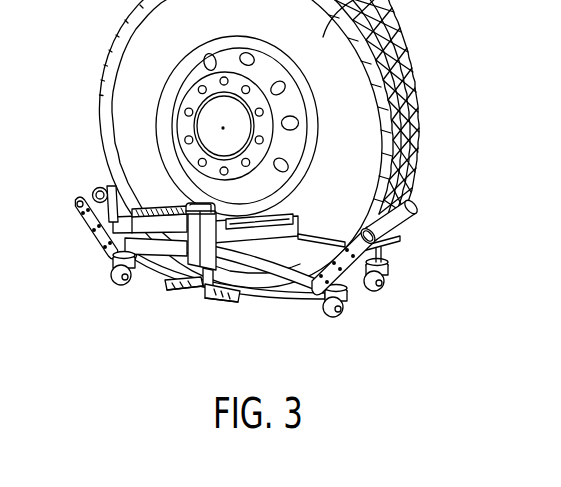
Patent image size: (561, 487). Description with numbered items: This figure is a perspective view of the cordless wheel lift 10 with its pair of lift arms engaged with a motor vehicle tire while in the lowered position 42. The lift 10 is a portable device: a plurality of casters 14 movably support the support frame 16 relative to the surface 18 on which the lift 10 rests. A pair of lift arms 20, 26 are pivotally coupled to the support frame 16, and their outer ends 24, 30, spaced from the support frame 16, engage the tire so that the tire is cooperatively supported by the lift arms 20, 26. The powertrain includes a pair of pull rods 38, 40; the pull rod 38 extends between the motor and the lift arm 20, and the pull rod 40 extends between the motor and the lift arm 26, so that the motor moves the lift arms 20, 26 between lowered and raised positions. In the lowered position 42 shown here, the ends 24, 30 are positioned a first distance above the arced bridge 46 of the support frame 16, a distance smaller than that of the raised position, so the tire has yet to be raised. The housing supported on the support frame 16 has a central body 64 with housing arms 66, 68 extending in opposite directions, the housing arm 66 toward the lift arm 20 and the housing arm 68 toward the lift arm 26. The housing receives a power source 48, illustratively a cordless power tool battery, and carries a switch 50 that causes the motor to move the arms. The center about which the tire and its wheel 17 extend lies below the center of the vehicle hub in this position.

The cordless wheel lift 10 is at (418, 186).
The casters 14 is at (110, 276).
The support frame 16 is at (151, 289).
The wheel 17 is at (227, 58).
The surface 18 is at (249, 253).
The lift arm 20 is at (90, 240).
The end of lift arm 24 is at (76, 204).
The lift arm 26 is at (393, 241).
The end of lift arm 30 is at (418, 208).
The pull rod 38 is at (100, 187).
The pull rod 40 is at (333, 241).
The lowered position 42 is at (427, 200).
The arced bridge 46 is at (294, 268).
The power source 48 is at (232, 302).
The switch 50 is at (181, 299).
The central body 64 is at (186, 214).
The housing arm 66 is at (138, 209).
The housing arm 68 is at (298, 226).